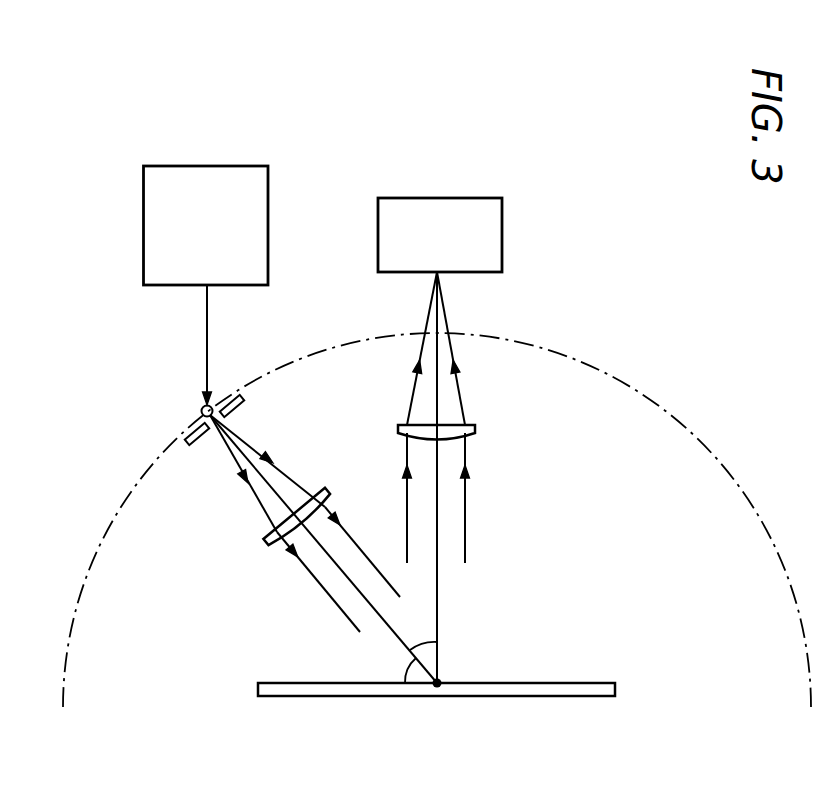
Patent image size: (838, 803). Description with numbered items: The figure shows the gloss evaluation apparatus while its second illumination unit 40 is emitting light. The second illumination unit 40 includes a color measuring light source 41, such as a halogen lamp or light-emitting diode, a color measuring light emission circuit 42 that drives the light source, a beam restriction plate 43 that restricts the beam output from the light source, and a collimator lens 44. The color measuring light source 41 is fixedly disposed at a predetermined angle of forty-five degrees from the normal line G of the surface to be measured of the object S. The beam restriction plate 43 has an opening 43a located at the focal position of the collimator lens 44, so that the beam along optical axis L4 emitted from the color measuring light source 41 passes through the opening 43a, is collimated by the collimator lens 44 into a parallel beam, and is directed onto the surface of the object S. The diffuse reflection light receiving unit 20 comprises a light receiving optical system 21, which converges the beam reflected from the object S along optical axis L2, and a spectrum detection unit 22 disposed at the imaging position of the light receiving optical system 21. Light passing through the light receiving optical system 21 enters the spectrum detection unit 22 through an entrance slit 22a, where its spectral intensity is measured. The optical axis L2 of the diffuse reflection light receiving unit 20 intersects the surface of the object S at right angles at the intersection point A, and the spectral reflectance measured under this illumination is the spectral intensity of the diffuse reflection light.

The diffuse reflection light receiving unit 20 is at (565, 250).
The light receiving optical system 21 is at (476, 430).
The spectrum detection unit 22 is at (502, 212).
The entrance slit 22a is at (438, 274).
The second illumination unit 40 is at (104, 281).
The color measuring light source 41 is at (202, 408).
The color measuring light emission circuit 42 is at (207, 166).
The beam restriction plate 43 is at (245, 397).
The opening 43a is at (217, 437).
The collimator lens 44 is at (322, 484).
The optical axis L2 is at (437, 513).
The optical axis L4 is at (330, 563).
The normal line G is at (436, 390).
The object to be measured S is at (380, 688).
The intersection point A is at (437, 690).